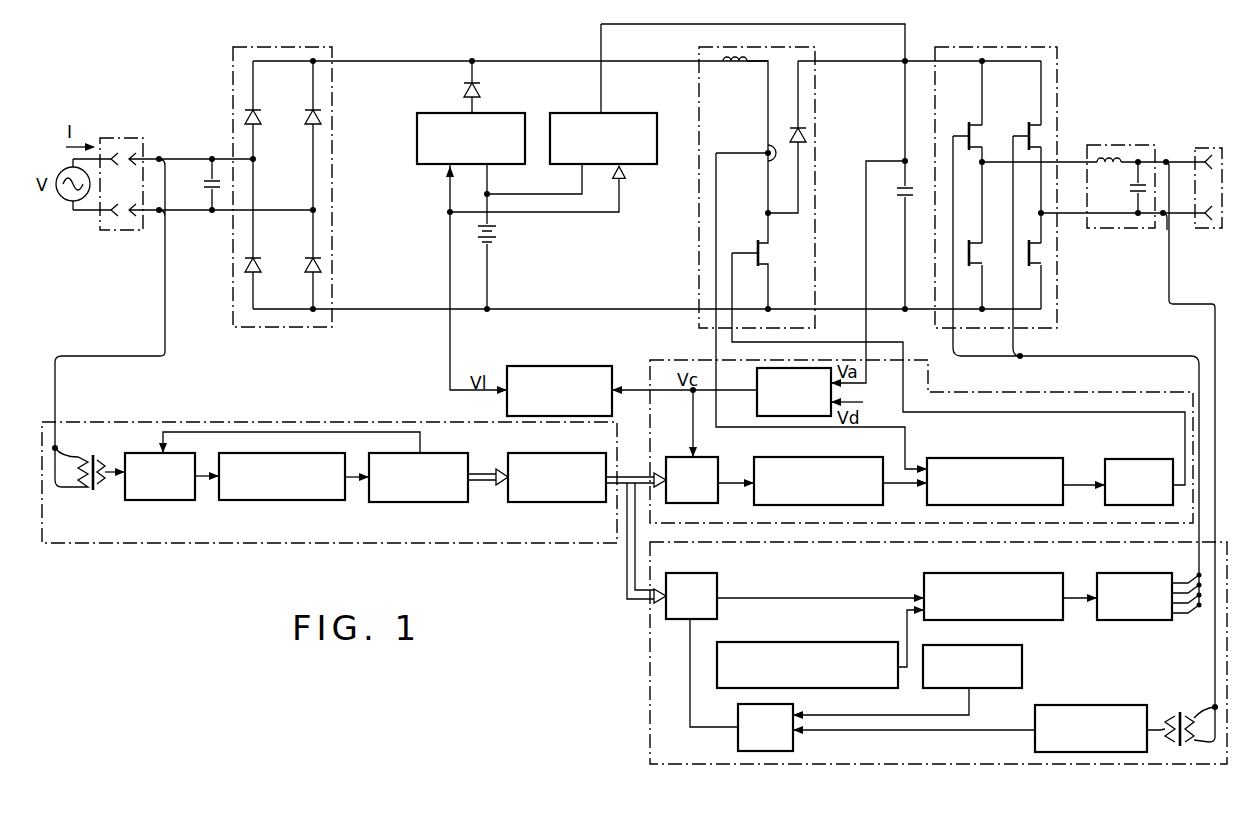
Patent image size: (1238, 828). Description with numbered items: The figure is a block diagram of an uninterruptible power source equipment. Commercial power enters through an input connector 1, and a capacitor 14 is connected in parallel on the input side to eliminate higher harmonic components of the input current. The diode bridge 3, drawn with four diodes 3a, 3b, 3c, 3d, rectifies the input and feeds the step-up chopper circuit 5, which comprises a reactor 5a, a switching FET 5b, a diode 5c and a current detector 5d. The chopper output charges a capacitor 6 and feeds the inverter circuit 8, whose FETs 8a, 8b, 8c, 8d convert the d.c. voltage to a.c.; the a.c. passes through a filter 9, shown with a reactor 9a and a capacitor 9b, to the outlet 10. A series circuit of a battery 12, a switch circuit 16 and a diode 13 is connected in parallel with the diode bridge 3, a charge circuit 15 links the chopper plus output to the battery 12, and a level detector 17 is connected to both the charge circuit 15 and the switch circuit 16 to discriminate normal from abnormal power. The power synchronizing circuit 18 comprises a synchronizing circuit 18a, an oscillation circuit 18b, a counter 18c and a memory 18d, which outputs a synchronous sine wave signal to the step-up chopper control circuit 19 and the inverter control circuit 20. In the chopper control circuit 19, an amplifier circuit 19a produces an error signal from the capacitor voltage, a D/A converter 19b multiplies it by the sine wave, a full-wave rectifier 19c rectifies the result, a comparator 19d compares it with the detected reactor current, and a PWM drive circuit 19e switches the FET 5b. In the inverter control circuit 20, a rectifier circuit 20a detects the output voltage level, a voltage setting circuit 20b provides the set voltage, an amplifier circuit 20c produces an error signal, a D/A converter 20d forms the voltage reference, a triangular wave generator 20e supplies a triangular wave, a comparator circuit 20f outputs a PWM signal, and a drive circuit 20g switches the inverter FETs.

The input connector 1 is at (118, 137).
The diode bridge 3 is at (301, 177).
The diode 3a is at (261, 118).
The diode 3b is at (261, 266).
The diode 3c is at (305, 116).
The diode 3d is at (305, 267).
The step-up chopper circuit 5 is at (777, 178).
The reactor 5a is at (731, 70).
The FET 5b is at (757, 245).
The diode 5c is at (804, 133).
The current detector 5d is at (765, 151).
The capacitor 6 is at (898, 191).
The inverter circuit 8 is at (1016, 179).
The FET 8a is at (969, 123).
The FET 8b is at (974, 253).
The FET 8c is at (1029, 123).
The FET 8d is at (1036, 251).
The filter 9 is at (1114, 163).
The filter reactor 9a is at (1110, 148).
The filter capacitor 9b is at (1134, 187).
The outlet 10 is at (1213, 146).
The battery 12 is at (500, 234).
The diode 13 is at (462, 89).
The capacitor 14 is at (194, 184).
The charge circuit 15 is at (637, 113).
The switch circuit 16 is at (510, 113).
The level detector 17 is at (560, 366).
The power synchronizing circuit 18 is at (354, 464).
The power synchronizing circuit 18a is at (160, 500).
The oscillation circuit 18b is at (283, 500).
The counter 18c is at (420, 502).
The memory 18d is at (556, 502).
The step-up chopper control circuit 19 is at (921, 426).
The amplifier circuit 19a is at (757, 368).
The D/A converter circuit 19b is at (689, 457).
The full-wave rectifier circuit 19c is at (828, 457).
The comparator 19d is at (980, 458).
The PWM drive circuit 19e is at (1117, 459).
The inverter control circuit 20 is at (909, 653).
The rectifier circuit 20a is at (1092, 705).
The voltage setting circuit 20b is at (1022, 666).
The amplifier circuit 20c is at (738, 743).
The D/A converter circuit 20d is at (690, 573).
The triangular wave generator circuit 20e is at (778, 642).
The comparator circuit 20f is at (992, 573).
The drive circuit 20g is at (1130, 573).